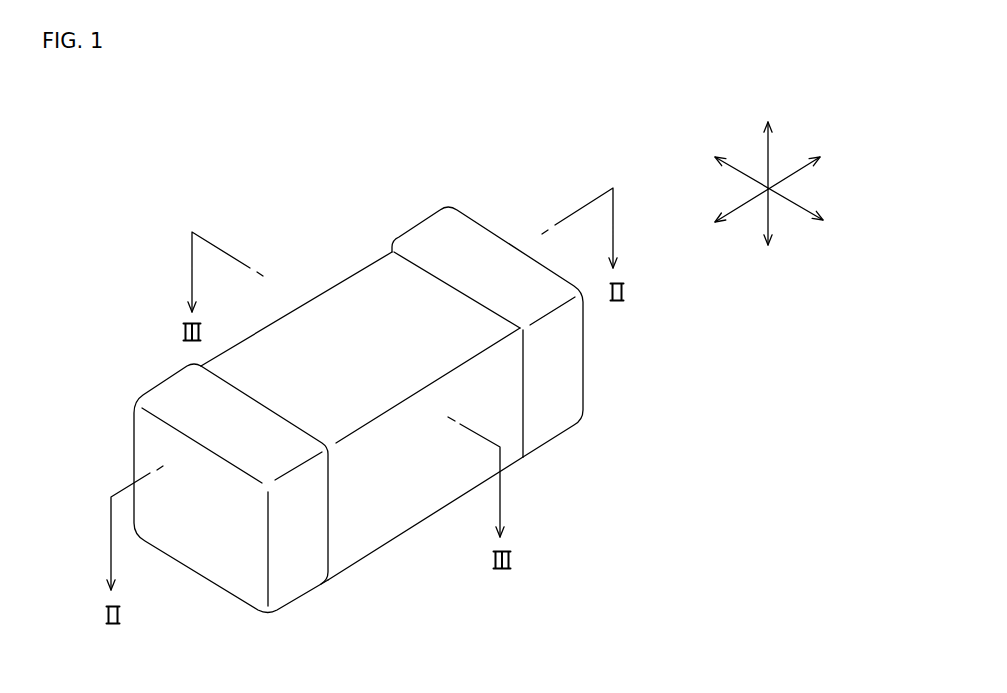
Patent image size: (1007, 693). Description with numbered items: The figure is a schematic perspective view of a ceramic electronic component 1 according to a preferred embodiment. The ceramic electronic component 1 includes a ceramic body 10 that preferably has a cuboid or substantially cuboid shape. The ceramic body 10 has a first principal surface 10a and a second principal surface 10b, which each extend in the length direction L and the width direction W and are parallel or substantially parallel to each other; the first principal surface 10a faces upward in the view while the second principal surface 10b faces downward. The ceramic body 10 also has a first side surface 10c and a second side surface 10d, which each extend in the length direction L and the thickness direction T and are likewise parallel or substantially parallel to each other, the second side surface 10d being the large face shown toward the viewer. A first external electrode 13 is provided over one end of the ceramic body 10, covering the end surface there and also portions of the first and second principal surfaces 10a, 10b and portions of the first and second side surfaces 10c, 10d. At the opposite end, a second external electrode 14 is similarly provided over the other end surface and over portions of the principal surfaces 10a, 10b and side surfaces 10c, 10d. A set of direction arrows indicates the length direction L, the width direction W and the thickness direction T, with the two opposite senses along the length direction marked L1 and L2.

The ceramic electronic component 1 is at (530, 177).
The ceramic body 10 is at (343, 255).
The first principal surface 10a is at (335, 313).
The second principal surface 10b is at (407, 528).
The first side surface 10c is at (373, 262).
The second side surface 10d is at (357, 535).
The first external electrode 13 is at (133, 453).
The second external electrode 14 is at (583, 363).
The length direction L is at (768, 183).
The first length direction side L1 is at (706, 226).
The second length direction side L2 is at (829, 157).
The width direction W is at (798, 202).
The thickness direction T is at (772, 220).